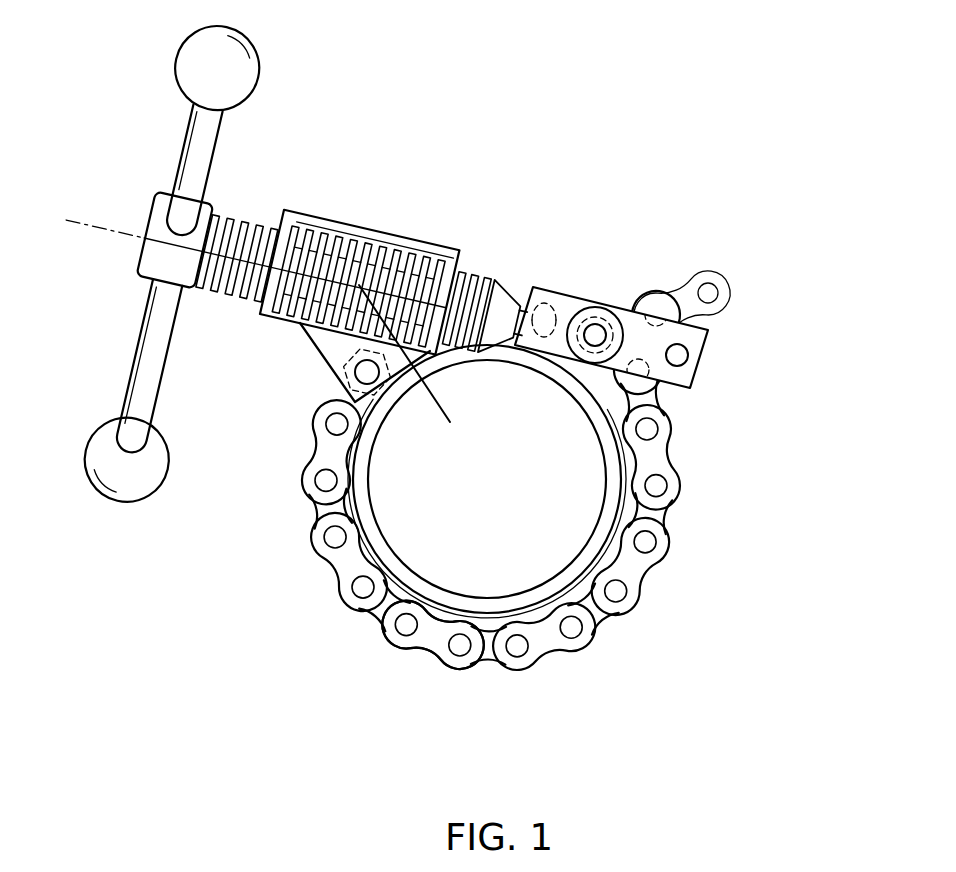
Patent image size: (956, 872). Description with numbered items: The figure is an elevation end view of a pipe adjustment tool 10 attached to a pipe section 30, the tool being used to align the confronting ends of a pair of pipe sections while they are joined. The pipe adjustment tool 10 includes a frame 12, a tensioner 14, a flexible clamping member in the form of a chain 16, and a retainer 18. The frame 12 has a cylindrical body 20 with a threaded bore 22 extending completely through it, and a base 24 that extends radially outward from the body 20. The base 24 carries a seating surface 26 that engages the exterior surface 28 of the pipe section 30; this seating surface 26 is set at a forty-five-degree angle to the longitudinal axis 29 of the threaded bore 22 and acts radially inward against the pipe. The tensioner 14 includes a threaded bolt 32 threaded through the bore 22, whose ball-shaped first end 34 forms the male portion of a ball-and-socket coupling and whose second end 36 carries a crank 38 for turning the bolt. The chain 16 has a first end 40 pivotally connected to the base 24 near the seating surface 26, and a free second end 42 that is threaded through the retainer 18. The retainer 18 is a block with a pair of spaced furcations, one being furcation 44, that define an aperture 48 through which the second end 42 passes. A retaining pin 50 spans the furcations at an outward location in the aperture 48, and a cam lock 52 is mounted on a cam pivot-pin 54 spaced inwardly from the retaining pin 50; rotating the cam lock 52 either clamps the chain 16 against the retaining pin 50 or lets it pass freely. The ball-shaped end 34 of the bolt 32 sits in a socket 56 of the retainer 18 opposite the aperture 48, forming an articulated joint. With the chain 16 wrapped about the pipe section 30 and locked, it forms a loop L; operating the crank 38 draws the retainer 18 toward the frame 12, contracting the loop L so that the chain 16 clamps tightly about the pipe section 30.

The pipe adjustment tool 10 is at (584, 57).
The frame 12 is at (373, 224).
The tensioner 14 is at (360, 212).
The chain 16 is at (491, 573).
The retainer 18 is at (673, 344).
The body 20 is at (380, 233).
The threaded bore 22 is at (479, 236).
The base 24 is at (308, 368).
The seating surface 26 is at (487, 481).
The exterior surface 28 is at (395, 650).
The longitudinal axis 29 is at (226, 287).
The pipe section 30 is at (300, 564).
The threaded bolt 32 is at (142, 282).
The first end 34 is at (560, 268).
The second end 36 is at (158, 125).
The crank 38 is at (104, 381).
The first end 40 is at (313, 399).
The second end 42 is at (725, 295).
The furcation 44 is at (703, 420).
The aperture 48 is at (680, 293).
The retaining pin 50 is at (738, 342).
The cam lock 52 is at (641, 302).
The cam pivot-pin 54 is at (586, 406).
The socket 56 is at (514, 371).
The loop L is at (647, 677).